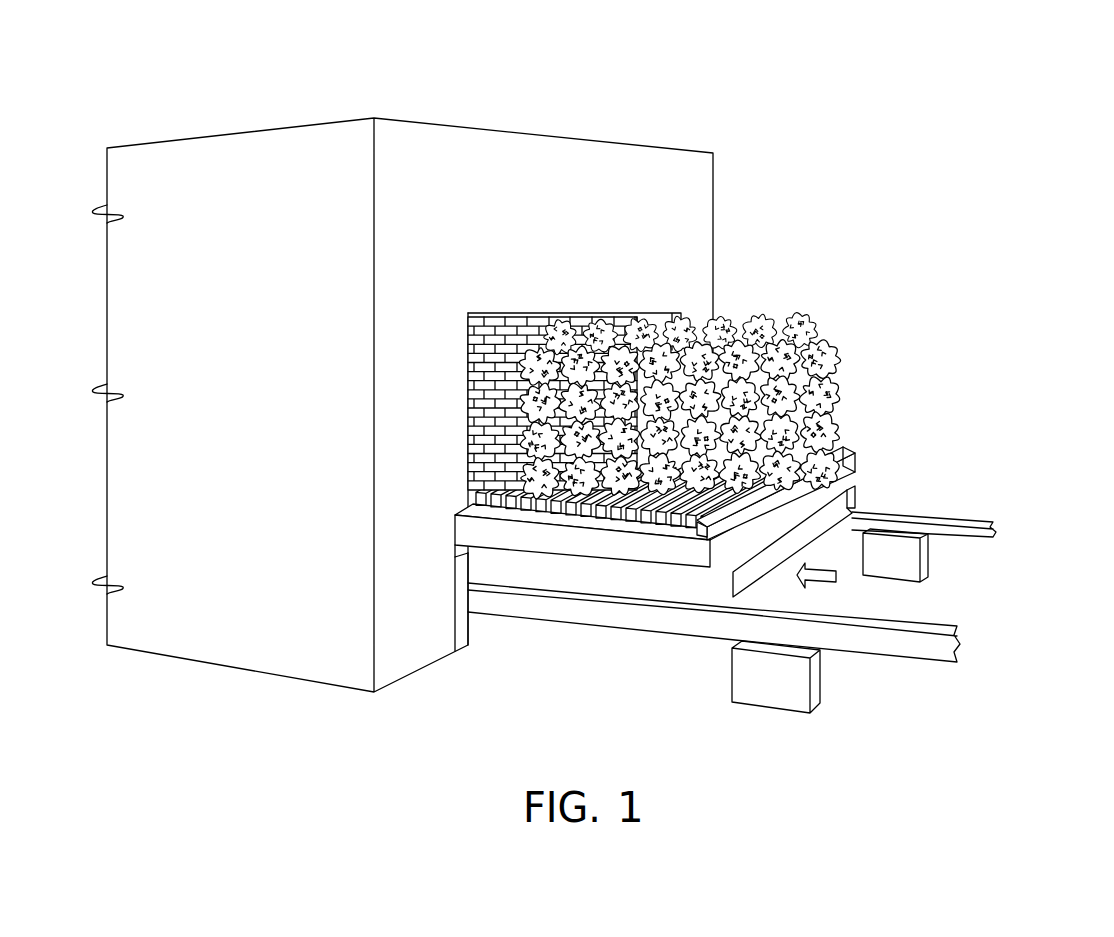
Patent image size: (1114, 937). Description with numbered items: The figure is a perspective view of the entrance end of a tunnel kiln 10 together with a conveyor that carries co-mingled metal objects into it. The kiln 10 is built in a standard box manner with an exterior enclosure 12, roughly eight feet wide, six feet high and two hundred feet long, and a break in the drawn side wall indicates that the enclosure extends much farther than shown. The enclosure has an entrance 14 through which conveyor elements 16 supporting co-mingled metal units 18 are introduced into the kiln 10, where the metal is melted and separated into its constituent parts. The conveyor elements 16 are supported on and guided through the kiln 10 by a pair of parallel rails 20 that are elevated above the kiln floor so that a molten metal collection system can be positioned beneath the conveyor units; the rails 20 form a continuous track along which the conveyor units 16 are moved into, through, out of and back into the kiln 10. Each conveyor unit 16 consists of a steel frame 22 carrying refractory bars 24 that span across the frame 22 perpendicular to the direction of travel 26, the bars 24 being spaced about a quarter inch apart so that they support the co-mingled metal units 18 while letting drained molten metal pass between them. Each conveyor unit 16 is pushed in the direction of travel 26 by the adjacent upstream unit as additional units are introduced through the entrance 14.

The tunnel kiln 10 is at (655, 79).
The exterior enclosure 12 is at (225, 135).
The entrance 14 is at (470, 630).
The conveyor element 16 is at (874, 432).
The co-mingled metal units 18 is at (824, 339).
The parallel rails 20 is at (987, 520).
The steel frame 22 is at (675, 556).
The refractory bars 24 is at (517, 512).
The direction of travel 26 is at (834, 584).